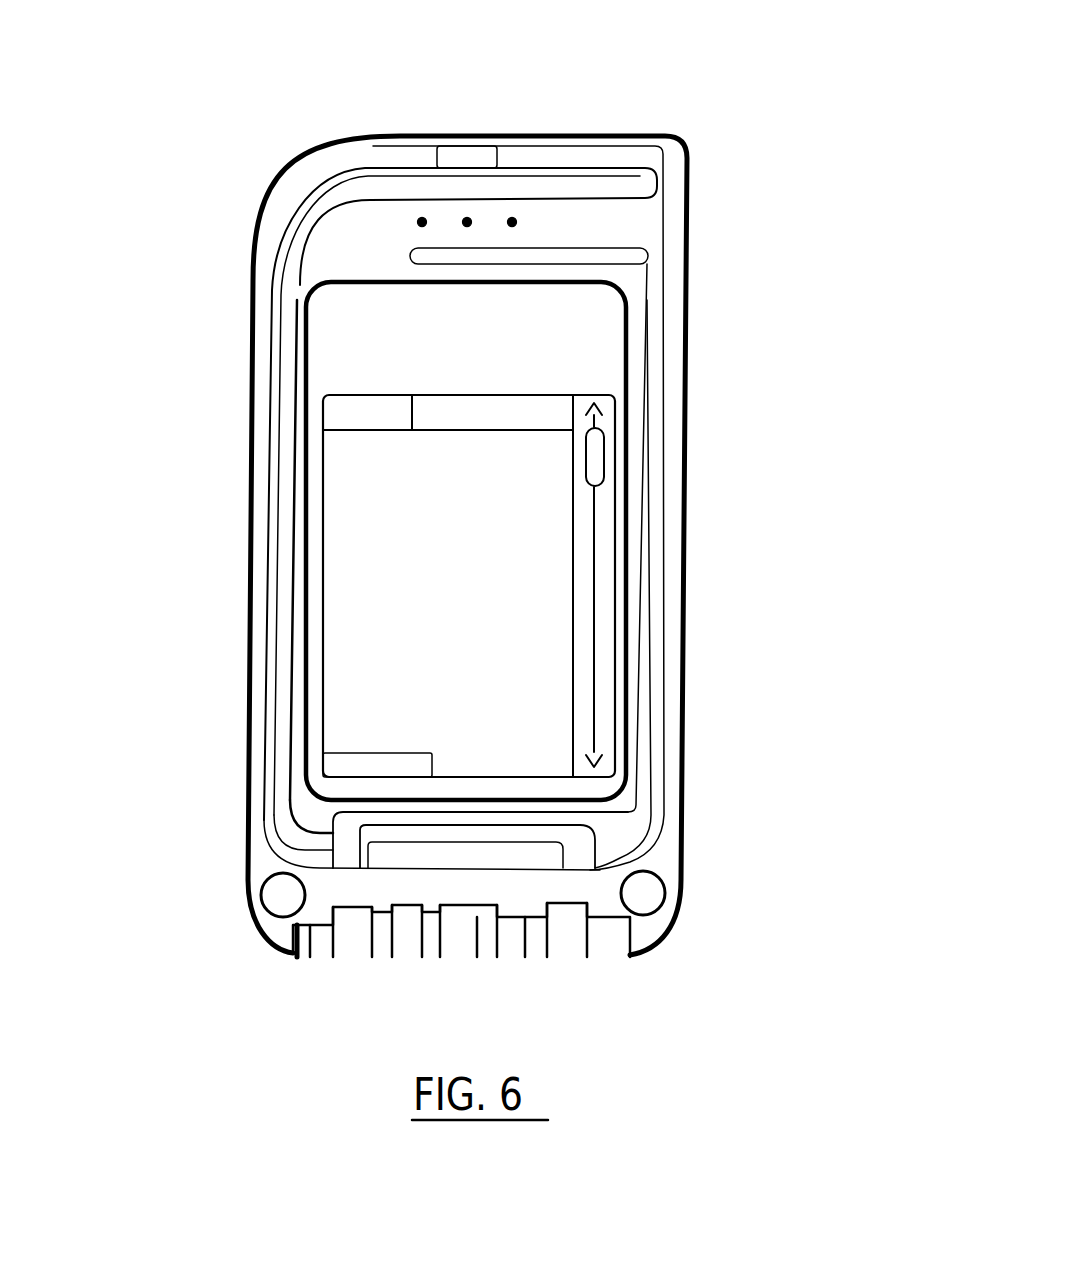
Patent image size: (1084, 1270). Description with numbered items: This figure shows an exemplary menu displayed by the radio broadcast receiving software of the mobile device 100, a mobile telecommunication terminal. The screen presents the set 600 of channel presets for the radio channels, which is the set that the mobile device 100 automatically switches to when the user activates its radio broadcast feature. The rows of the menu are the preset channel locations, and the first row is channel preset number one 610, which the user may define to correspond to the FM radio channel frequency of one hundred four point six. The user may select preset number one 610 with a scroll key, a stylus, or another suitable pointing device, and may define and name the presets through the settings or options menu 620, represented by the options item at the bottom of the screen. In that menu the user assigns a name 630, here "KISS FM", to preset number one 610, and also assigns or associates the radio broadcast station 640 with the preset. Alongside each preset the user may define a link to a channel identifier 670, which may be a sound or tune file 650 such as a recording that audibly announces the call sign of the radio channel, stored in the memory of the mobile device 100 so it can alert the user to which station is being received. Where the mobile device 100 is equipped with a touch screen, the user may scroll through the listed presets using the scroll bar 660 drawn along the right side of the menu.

The mobile device 100 is at (742, 122).
The set of channel presets for the radio channels 600 is at (530, 635).
The channel preset number one 610 is at (330, 478).
The settings or options menu 620 is at (327, 765).
The name 630 is at (400, 462).
The radio broadcast station 640 is at (462, 497).
The sound or tune file 650 is at (540, 498).
The scroll bar 660 is at (603, 452).
The channel identifier 670 is at (548, 444).